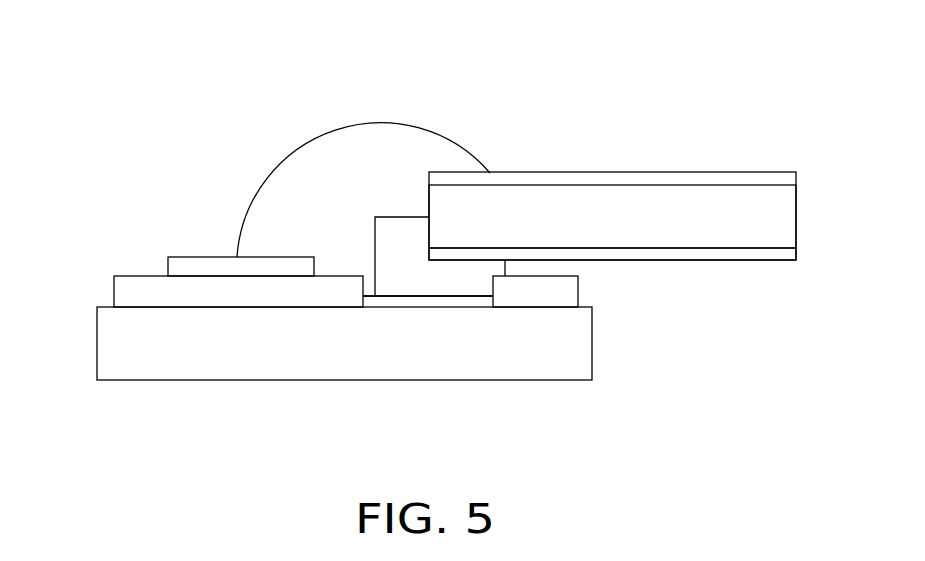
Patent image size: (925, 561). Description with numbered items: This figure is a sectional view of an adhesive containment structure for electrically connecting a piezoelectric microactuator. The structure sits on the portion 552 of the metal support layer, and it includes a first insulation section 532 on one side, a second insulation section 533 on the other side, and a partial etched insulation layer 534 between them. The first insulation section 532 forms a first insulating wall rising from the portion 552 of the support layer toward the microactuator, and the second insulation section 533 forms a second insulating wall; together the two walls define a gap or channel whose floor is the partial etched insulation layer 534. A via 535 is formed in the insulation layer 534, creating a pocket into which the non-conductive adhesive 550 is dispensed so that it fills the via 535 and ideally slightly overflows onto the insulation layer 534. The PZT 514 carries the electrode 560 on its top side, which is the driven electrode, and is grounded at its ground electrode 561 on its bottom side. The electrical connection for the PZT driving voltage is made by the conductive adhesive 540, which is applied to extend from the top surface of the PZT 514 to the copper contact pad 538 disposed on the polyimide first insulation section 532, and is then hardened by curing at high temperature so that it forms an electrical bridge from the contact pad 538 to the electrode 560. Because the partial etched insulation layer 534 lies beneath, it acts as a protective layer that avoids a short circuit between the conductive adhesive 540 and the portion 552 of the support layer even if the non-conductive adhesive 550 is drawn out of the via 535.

The PZT 514 is at (547, 193).
The first insulation section 532 is at (121, 255).
The second insulation section 533 is at (597, 279).
The partial etched insulation layer 534 is at (394, 324).
The via 535 is at (408, 258).
The contact pad 538 is at (226, 239).
The conductive adhesive 540 is at (358, 150).
The non-conductive adhesive 550 is at (472, 296).
The portion of the support layer 552 is at (550, 362).
The electrode 560 is at (649, 157).
The ground electrode 561 is at (740, 265).